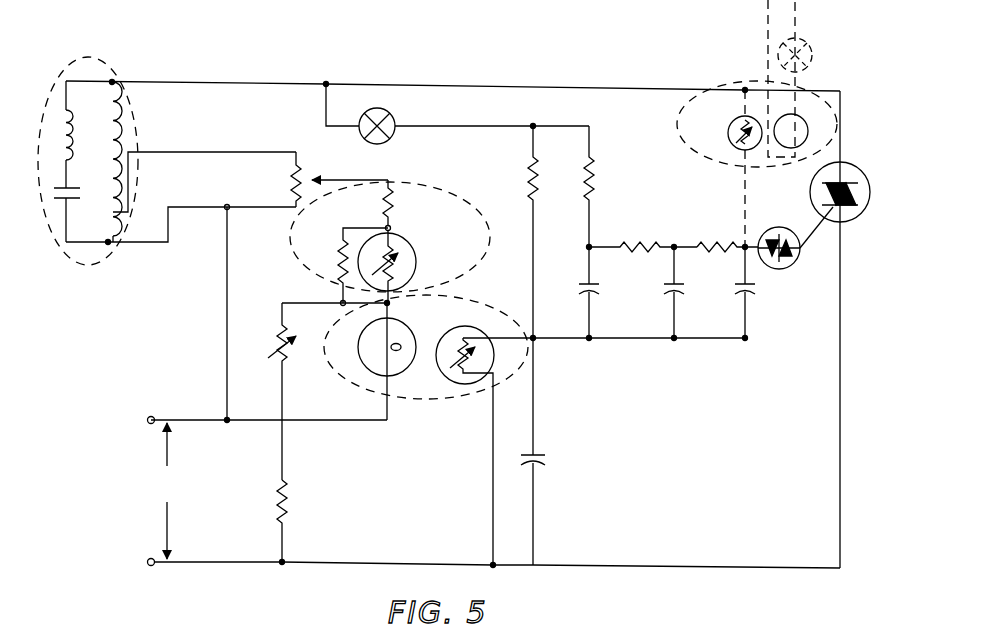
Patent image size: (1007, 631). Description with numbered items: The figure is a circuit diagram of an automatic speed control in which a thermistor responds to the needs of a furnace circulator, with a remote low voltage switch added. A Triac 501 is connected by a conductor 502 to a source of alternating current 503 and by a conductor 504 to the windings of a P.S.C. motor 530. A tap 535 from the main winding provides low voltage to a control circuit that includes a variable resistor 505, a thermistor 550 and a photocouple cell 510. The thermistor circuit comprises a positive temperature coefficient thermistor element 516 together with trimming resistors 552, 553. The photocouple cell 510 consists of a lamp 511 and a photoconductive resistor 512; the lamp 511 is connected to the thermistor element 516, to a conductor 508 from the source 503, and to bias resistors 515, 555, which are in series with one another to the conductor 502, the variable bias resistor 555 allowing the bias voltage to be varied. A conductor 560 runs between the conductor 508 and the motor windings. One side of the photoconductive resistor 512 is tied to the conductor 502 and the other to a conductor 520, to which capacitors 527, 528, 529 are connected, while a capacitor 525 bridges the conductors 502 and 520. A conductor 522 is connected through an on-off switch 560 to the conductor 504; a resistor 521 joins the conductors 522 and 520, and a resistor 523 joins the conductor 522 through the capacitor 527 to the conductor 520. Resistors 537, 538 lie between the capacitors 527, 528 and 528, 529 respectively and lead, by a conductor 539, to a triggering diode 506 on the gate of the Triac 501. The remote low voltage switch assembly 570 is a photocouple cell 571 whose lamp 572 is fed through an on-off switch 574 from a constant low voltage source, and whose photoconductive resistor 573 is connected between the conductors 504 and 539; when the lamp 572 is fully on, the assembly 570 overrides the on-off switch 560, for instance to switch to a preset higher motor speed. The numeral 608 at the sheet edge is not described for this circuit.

The Triac 501 is at (863, 236).
The conductor 502 is at (838, 427).
The source of alternating current 503 is at (156, 500).
The conductor 504 is at (467, 84).
The variable resistor 505 is at (302, 165).
The triggering diode 506 is at (790, 272).
The conductor 508 is at (202, 418).
The photocouple cell 510 is at (413, 390).
The lamp 511 is at (410, 337).
The photoconductive resistor 512 is at (460, 388).
The bias resistor 515 is at (287, 510).
The positive temperature coefficient thermistor element 516 is at (418, 262).
The conductor 520 is at (622, 345).
The resistor 521 is at (540, 188).
The conductor 522 is at (432, 130).
The resistor 523 is at (597, 182).
The capacitor 525 is at (542, 460).
The capacitor 527 is at (582, 290).
The capacitor 528 is at (578, 290).
The capacitor 529 is at (756, 303).
The P.S.C. motor 530 is at (93, 78).
The tap 535 is at (107, 212).
The resistor 537 is at (632, 245).
The resistor 538 is at (703, 248).
The conductor 539 is at (750, 241).
The thermistor 550 is at (430, 207).
The trimming resistor 552 is at (382, 205).
The trimming resistor 553 is at (343, 256).
The variable bias resistor 555 is at (290, 360).
The on-off switch 560 is at (377, 144).
The remote low voltage switch assembly 570 is at (807, 100).
The photocouple cell 571 is at (678, 123).
The lamp 572 is at (802, 125).
The photoconductive resistor 573 is at (735, 151).
The on-off switch 574 is at (800, 43).
The reference numeral 608 is at (184, 625).